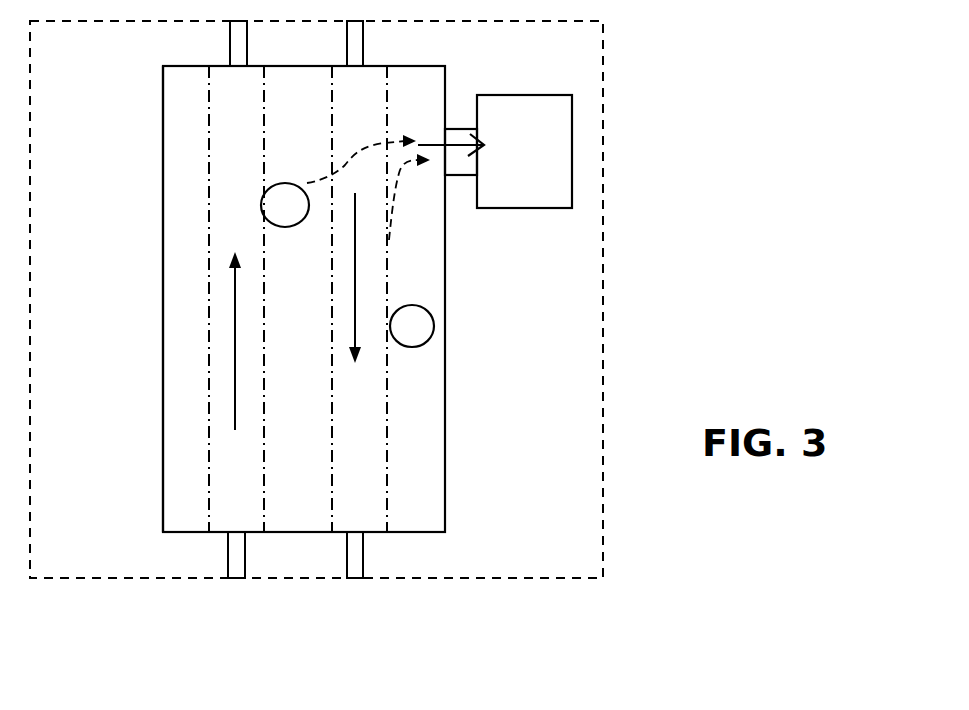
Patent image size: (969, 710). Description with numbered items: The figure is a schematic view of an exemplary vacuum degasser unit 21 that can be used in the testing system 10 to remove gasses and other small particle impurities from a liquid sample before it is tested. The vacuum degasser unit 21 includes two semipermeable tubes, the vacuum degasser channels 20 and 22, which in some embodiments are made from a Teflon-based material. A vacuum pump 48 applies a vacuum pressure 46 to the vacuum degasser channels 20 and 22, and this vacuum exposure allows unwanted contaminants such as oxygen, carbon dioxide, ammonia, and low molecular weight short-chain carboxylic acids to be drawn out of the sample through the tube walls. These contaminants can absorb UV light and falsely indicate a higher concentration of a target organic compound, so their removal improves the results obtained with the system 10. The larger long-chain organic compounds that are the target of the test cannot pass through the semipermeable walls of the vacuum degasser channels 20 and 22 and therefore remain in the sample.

The system 10 is at (363, 290).
The vacuum degasser channel 20 is at (209, 145).
The vacuum degasser unit 21 is at (163, 355).
The vacuum degasser channel 22 is at (387, 403).
The vacuum pressure 46 is at (432, 145).
The vacuum pump 48 is at (555, 158).